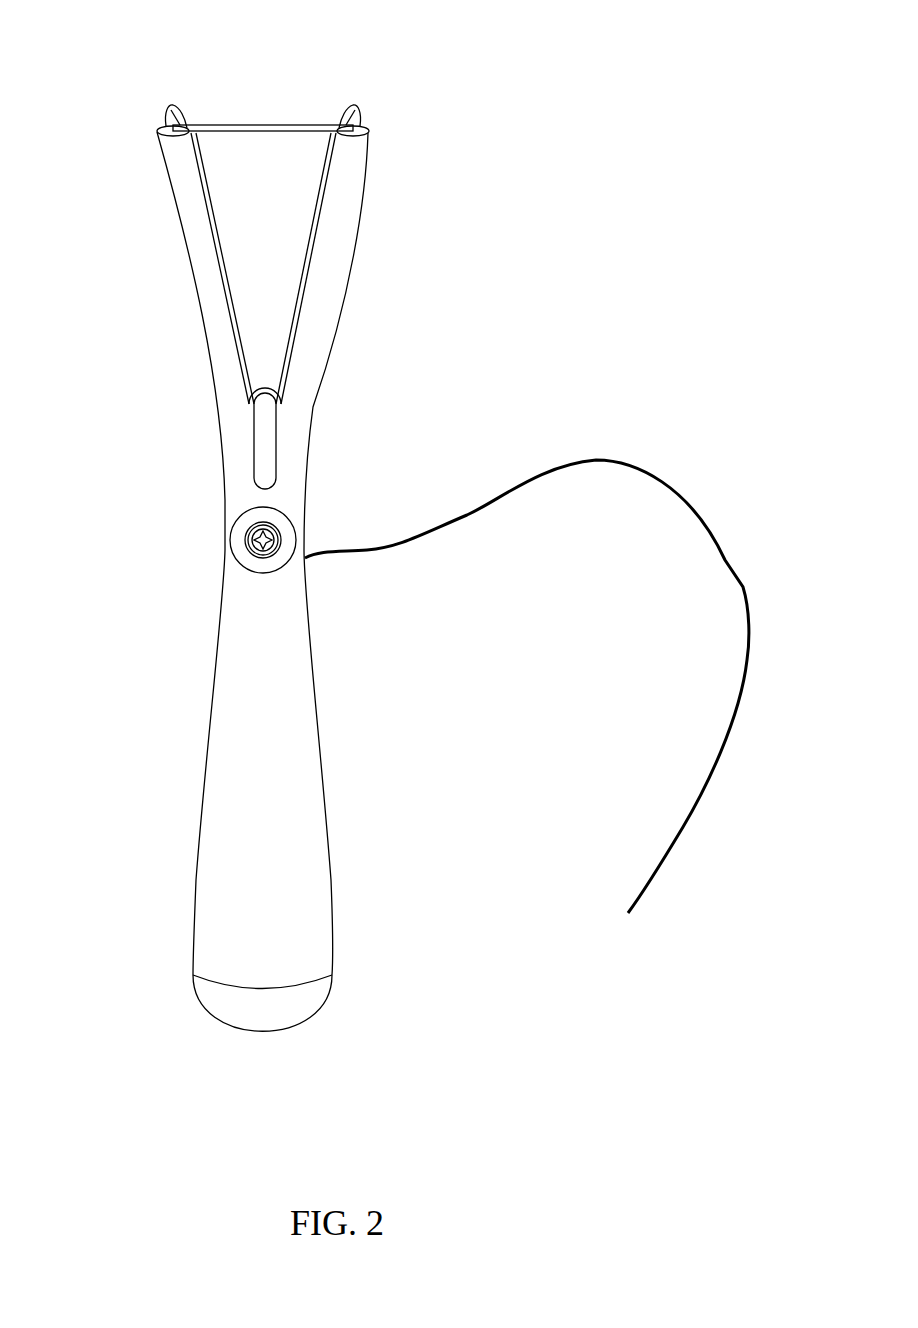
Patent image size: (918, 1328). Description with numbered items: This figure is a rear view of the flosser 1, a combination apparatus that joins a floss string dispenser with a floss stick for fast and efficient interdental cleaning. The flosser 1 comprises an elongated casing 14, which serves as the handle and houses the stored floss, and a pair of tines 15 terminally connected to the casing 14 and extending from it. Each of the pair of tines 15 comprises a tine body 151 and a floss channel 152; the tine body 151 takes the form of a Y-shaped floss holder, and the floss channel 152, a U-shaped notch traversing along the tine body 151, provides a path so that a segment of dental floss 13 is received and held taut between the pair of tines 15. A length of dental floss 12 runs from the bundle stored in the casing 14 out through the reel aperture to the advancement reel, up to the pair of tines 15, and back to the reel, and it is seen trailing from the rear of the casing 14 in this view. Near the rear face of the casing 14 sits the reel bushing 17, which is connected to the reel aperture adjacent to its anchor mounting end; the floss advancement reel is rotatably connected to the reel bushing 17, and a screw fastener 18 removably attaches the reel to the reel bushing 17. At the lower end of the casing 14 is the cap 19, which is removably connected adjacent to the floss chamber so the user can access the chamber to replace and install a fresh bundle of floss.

The flosser 1 is at (497, 38).
The length of dental floss 12 is at (565, 463).
The segment of dental floss 13 is at (253, 125).
The casing 14 is at (343, 648).
The pair of tines 15 is at (420, 210).
The tine body 151 is at (180, 237).
The floss channel 152 is at (167, 108).
The reel bushing 17 is at (270, 573).
The screw fastener 18 is at (283, 540).
The cap 19 is at (287, 1020).